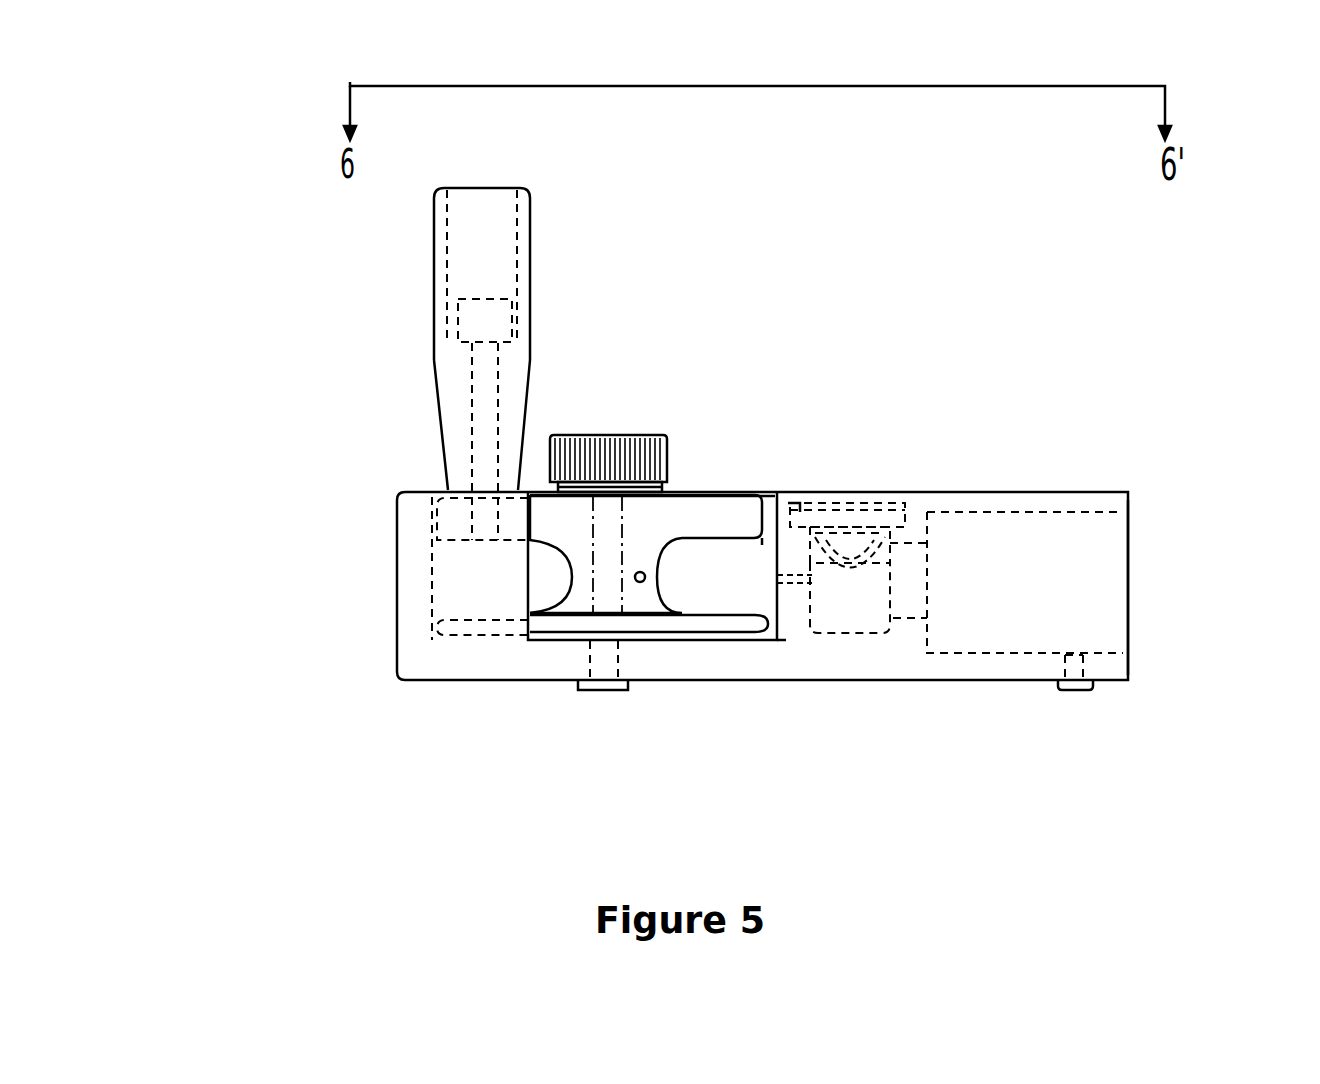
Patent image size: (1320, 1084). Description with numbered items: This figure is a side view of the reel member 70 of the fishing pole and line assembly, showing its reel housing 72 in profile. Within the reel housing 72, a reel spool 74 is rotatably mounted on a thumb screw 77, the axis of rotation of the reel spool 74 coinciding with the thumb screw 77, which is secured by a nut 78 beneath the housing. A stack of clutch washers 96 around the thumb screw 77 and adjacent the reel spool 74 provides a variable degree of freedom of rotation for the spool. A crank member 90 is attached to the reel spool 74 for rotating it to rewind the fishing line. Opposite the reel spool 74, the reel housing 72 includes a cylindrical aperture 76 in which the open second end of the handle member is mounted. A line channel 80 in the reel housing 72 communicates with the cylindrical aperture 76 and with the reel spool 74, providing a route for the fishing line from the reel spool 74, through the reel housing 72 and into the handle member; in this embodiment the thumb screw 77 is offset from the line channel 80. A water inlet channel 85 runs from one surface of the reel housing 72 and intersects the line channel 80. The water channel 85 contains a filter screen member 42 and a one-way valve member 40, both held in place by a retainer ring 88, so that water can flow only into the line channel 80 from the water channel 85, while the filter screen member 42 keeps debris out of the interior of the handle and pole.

The reel member 70 is at (337, 745).
The reel housing 72 is at (397, 618).
The reel spool member 74 is at (700, 512).
The cylindrical aperture in reel housing 76 is at (1128, 585).
The thumb screw for reel spool 77 is at (603, 437).
The nut for thumb screw 78 is at (603, 692).
The line channel in reel housing 80 is at (792, 582).
The water channel in reel housing 85 is at (848, 615).
The retainer ring for filter screen and valve members 88 is at (800, 503).
The crank member of reel spool 90 is at (525, 243).
The clutch washers 96 is at (665, 487).
The one-way valve member 40 is at (853, 552).
The filter screen member 42 is at (848, 520).